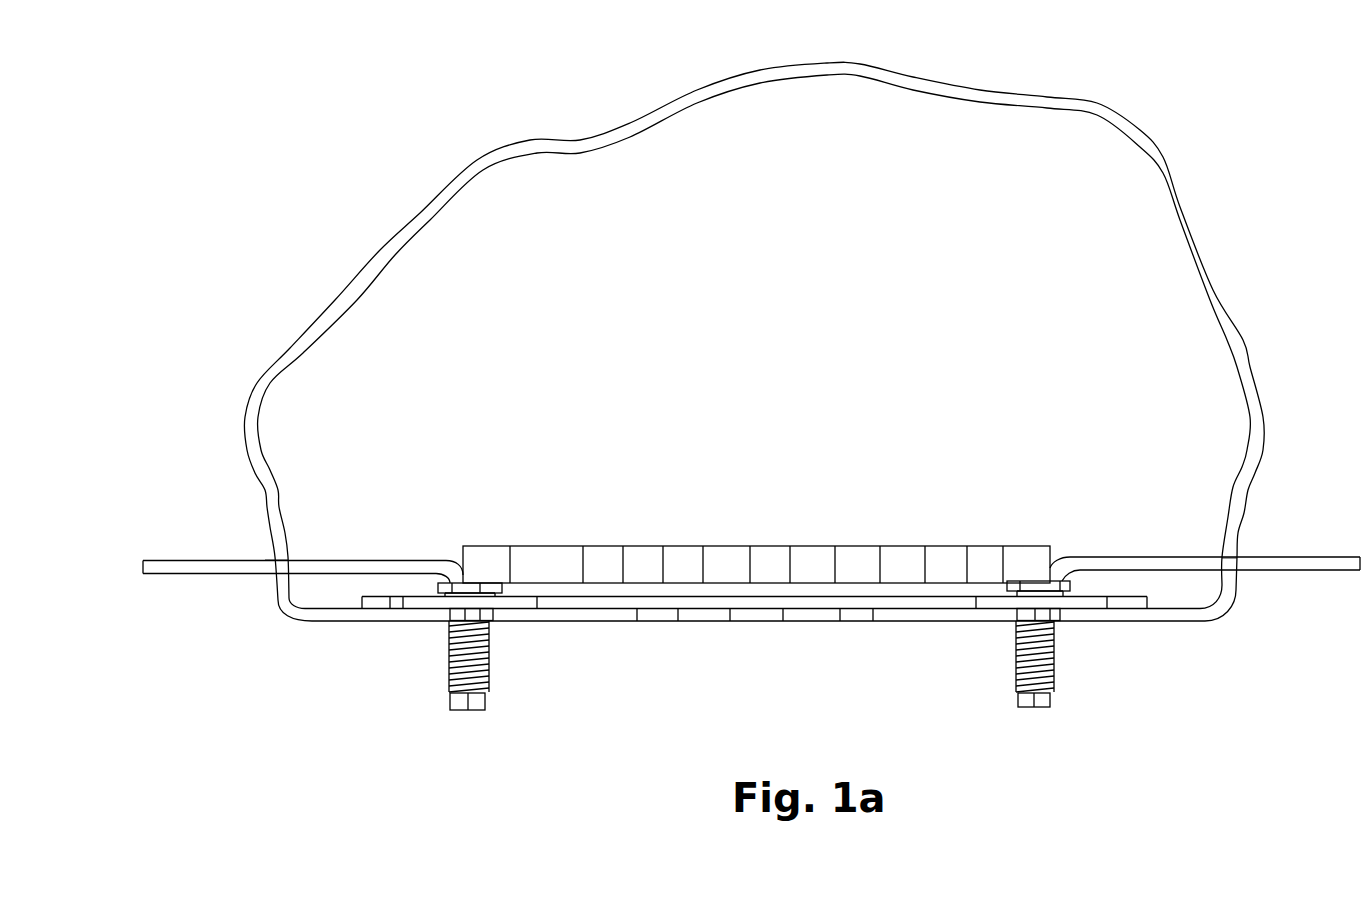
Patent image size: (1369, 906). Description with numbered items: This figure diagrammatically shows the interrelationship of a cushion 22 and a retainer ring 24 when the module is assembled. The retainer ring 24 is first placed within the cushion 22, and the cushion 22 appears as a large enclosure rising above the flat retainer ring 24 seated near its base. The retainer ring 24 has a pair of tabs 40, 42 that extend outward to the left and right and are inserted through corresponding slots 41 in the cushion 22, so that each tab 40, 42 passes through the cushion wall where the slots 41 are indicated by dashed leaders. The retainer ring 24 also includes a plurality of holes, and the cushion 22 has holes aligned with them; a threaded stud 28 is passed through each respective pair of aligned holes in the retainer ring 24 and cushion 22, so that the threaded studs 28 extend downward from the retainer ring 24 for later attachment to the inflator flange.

The cushion 22 is at (432, 203).
The retainer ring 24 is at (548, 545).
The threaded stud 28 is at (488, 653).
The tab 40 is at (210, 558).
The slot 41 is at (273, 555).
The tab 42 is at (1335, 557).